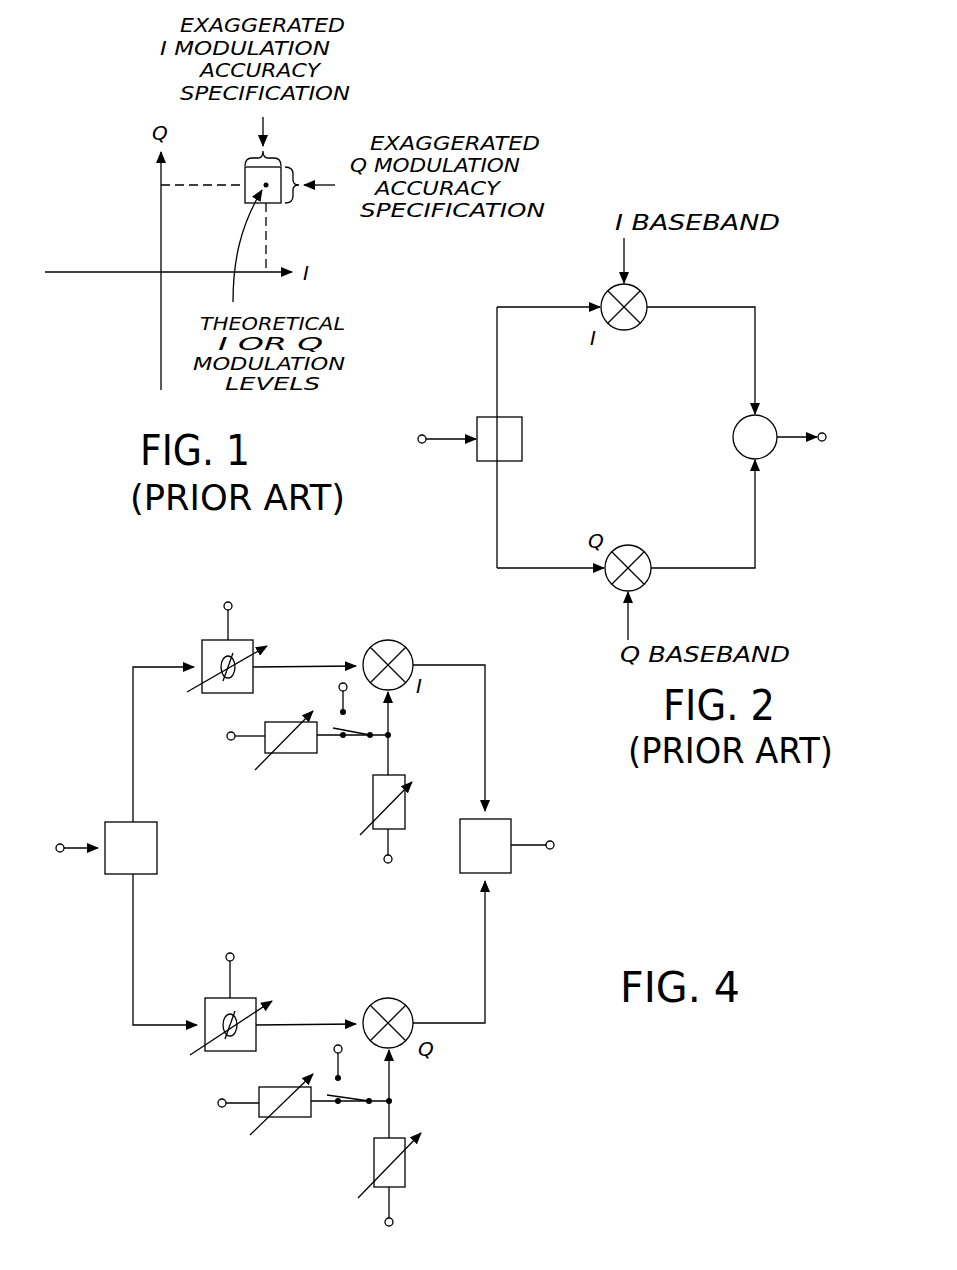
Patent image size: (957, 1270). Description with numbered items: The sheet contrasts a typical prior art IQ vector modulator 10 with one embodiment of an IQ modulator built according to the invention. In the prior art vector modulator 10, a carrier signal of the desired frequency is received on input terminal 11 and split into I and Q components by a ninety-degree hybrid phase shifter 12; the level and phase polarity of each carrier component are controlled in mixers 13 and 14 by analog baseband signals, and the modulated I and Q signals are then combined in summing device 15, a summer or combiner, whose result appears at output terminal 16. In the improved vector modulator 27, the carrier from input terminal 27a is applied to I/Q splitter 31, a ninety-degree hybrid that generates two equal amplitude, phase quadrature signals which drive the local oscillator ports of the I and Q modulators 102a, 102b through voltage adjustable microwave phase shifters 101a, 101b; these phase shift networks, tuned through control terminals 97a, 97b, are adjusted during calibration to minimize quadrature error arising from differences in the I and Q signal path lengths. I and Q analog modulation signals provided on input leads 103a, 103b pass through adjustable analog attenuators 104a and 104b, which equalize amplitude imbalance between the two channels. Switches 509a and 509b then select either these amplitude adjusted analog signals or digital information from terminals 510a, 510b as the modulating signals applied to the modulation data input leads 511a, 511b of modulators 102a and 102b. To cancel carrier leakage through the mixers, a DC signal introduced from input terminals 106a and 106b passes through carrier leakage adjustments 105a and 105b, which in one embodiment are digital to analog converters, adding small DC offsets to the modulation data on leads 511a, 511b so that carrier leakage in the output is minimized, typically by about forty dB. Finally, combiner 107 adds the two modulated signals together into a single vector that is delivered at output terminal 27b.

In FIG. 2, the vector modulator 10 is at (731, 193).
In FIG. 2, the input terminal 11 is at (420, 446).
In FIG. 2, the 90° hybrid phase shifter 12 is at (512, 417).
In FIG. 2, the mixer 13 is at (645, 292).
In FIG. 2, the mixer 14 is at (648, 551).
In FIG. 2, the summing device 15 is at (771, 422).
In FIG. 2, the output terminal 16 is at (821, 442).
In FIG. 4, the vector modulator 27 is at (143, 1184).
In FIG. 4, the input terminal 27a is at (63, 843).
In FIG. 4, the output terminal 27b is at (552, 850).
In FIG. 4, the I/Q splitter 31 is at (157, 848).
In FIG. 4, the phase control terminal 97a is at (232, 601).
In FIG. 4, the phase control terminal 97b is at (235, 953).
In FIG. 4, the microwave phase shifter 101a is at (218, 693).
In FIG. 4, the microwave phase shifter 101b is at (215, 1052).
In FIG. 4, the I mixer 102a is at (405, 643).
In FIG. 4, the Q mixer 102b is at (393, 998).
In FIG. 4, the input lead 103a is at (233, 742).
In FIG. 4, the input lead 103b is at (221, 1108).
In FIG. 4, the adjustable analog attenuator 104a is at (287, 755).
In FIG. 4, the adjustable analog attenuator 104b is at (282, 1120).
In FIG. 4, the carrier leakage adjustment 105a is at (405, 812).
In FIG. 4, the carrier leakage adjustment 105b is at (407, 1165).
In FIG. 4, the input terminal 106a is at (384, 860).
In FIG. 4, the input terminal 106b is at (394, 1223).
In FIG. 4, the combiner 107 is at (512, 828).
In FIG. 4, the switch 509a is at (360, 740).
In FIG. 4, the switch 509b is at (355, 1105).
In FIG. 4, the terminal 510a is at (339, 687).
In FIG. 4, the terminal 510b is at (334, 1048).
In FIG. 4, the I modulation data input lead 511a is at (392, 718).
In FIG. 4, the Q modulation data input lead 511b is at (395, 1085).